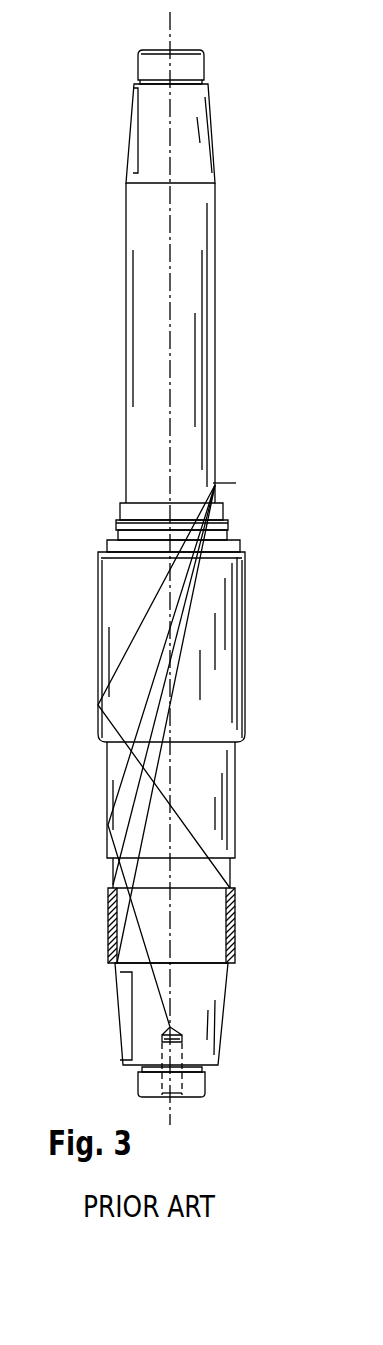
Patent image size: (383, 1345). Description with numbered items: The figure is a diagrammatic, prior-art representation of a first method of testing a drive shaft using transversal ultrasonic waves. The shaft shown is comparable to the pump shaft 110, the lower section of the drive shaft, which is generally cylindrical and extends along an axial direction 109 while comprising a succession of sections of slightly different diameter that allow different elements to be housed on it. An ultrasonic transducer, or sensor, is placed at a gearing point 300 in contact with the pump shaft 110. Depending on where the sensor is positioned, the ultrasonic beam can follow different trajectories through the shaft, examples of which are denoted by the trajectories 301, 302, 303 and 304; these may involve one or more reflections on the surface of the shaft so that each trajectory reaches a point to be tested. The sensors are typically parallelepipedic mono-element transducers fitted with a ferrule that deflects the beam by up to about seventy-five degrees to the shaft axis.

The axial direction 109 is at (172, 1108).
The pump shaft 110 is at (228, 243).
The gearing point 300 is at (230, 483).
The beam trajectory 301 is at (140, 620).
The beam trajectory 302 is at (193, 597).
The beam trajectory 303 is at (180, 630).
The beam trajectory 304 is at (150, 695).